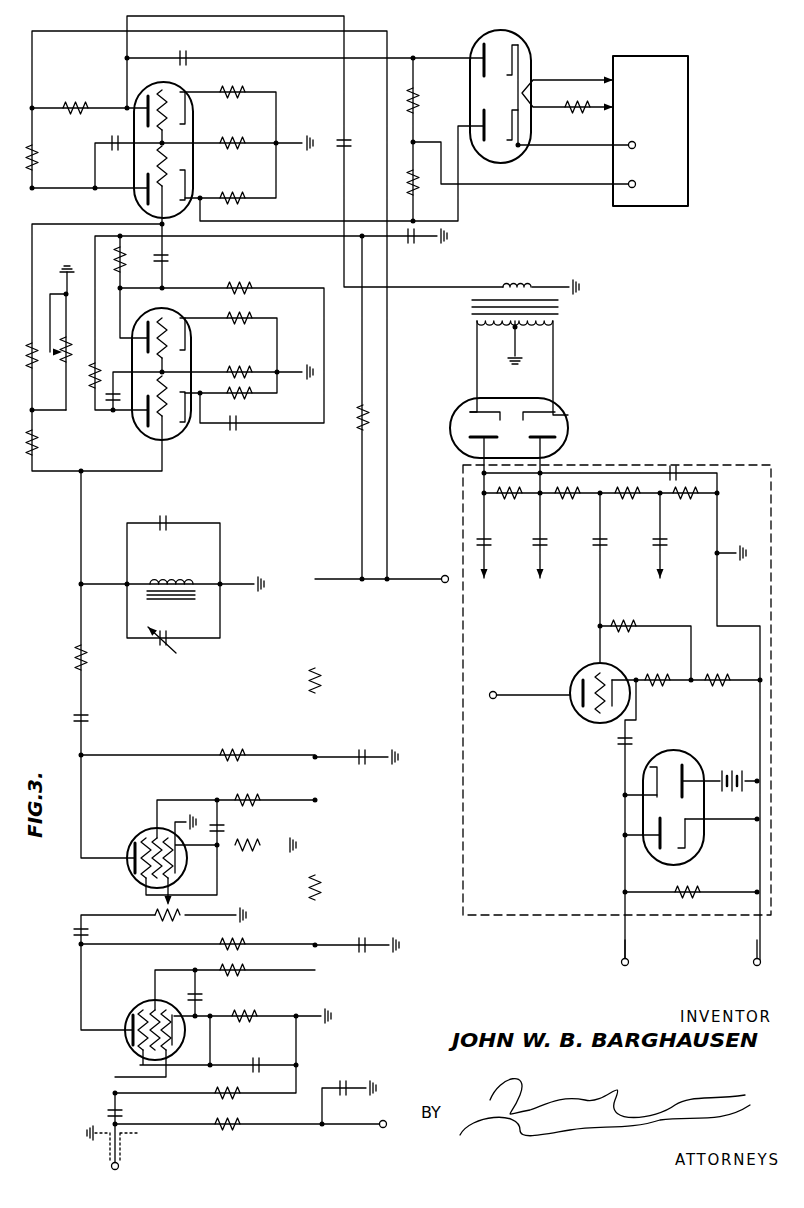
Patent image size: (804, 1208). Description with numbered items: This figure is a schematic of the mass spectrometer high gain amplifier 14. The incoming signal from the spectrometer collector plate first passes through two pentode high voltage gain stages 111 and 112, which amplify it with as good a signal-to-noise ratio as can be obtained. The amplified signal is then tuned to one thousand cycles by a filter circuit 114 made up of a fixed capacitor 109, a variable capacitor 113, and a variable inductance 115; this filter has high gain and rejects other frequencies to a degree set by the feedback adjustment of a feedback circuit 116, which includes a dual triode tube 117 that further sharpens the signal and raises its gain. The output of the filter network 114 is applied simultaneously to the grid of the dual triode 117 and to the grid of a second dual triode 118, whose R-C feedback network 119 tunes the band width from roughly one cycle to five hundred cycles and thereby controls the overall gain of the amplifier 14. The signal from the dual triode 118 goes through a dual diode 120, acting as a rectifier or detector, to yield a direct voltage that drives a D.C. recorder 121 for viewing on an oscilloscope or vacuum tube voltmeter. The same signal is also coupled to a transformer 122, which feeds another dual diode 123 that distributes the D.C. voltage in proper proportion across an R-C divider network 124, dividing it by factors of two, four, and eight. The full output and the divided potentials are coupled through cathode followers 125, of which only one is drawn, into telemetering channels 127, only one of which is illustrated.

The amplifier 14 is at (98, 888).
The fixed capacitor 109 is at (160, 518).
The pentode high voltage gain stage 111 is at (132, 1008).
The pentode high voltage gain stage 112 is at (132, 833).
The variable capacitor 113 is at (158, 642).
The filter circuit 114 is at (165, 572).
The variable inductance 115 is at (150, 606).
The feedback circuit 116 is at (108, 437).
The dual triode tube 117 is at (177, 439).
The second dual triode 118 is at (199, 157).
The R-C feedback network 119 is at (242, 255).
The dual diode 120 is at (471, 102).
The D.C. recorder 121 is at (643, 206).
The transformer 122 is at (563, 307).
The dual diode 123 is at (462, 413).
The R-C divider network 124 is at (630, 458).
The cathode follower 125 is at (590, 668).
The telemetering channel 127 is at (707, 948).